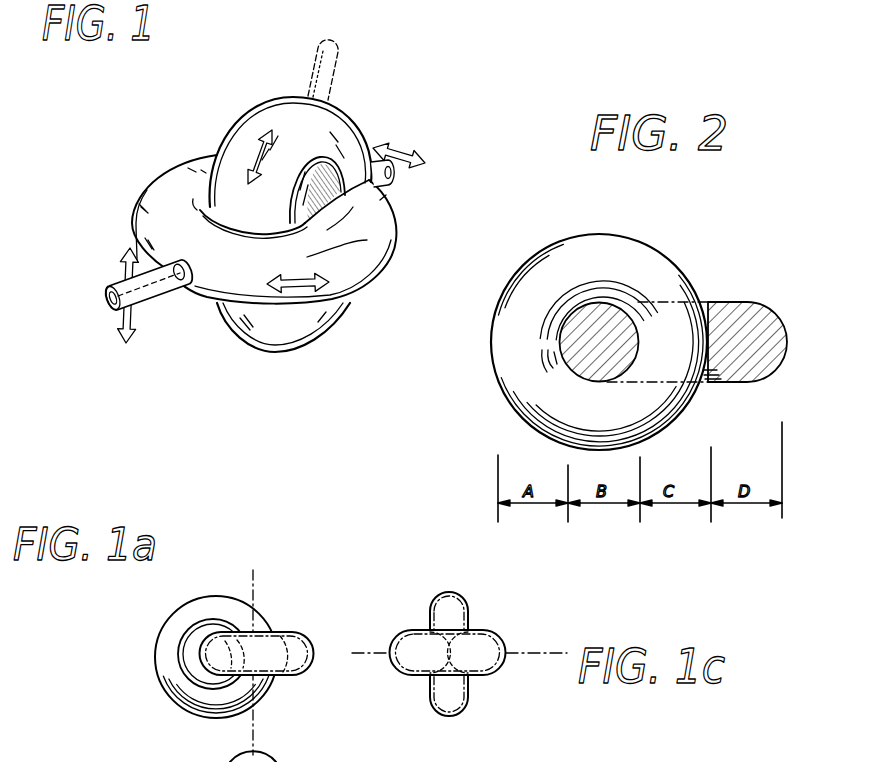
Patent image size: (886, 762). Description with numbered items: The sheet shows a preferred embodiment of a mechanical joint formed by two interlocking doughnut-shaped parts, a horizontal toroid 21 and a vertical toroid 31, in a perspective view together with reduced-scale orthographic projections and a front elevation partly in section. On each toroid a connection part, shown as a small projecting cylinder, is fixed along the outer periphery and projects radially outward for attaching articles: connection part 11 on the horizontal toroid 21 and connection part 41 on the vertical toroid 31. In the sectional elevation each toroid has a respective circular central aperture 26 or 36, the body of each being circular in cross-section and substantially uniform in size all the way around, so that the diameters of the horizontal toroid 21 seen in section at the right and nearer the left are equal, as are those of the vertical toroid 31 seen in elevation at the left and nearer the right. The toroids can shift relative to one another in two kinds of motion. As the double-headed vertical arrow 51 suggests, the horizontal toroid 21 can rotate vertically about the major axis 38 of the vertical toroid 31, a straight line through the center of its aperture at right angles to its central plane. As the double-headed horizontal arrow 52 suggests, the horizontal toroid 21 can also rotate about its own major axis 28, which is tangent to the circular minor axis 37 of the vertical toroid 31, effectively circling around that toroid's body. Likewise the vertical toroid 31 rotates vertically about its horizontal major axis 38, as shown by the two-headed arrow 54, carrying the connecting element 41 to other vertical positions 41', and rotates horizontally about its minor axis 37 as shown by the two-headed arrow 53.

In FIG. 1, the connection part 11 is at (152, 290).
In FIG. 1, the horizontal toroid 21 is at (369, 246).
In FIG. 2, the horizontal toroid 21 is at (600, 353).
In FIG. 1A, the horizontal toroid 21 is at (297, 643).
In FIG. 1C, the horizontal toroid 21 is at (498, 643).
In FIG. 2, the circular central aperture 26 is at (714, 295).
In FIG. 1A, the major axis 28 is at (253, 723).
In FIG. 1, the vertical toroid 31 is at (332, 130).
In FIG. 2, the vertical toroid 31 is at (626, 257).
In FIG. 1A, the vertical toroid 31 is at (208, 604).
In FIG. 1C, the vertical toroid 31 is at (448, 607).
In FIG. 2, the circular central aperture 36 is at (563, 333).
In FIG. 1A, the minor axis 37 is at (180, 654).
In FIG. 1C, the major axis 38 is at (528, 657).
In FIG. 1, the connection part 41 is at (405, 186).
In FIG. 1, the other vertical positions of connecting element 41' is at (287, 64).
In FIG. 1, the double-headed vertical arrow 51 is at (117, 330).
In FIG. 1, the double-headed horizontal arrow 52 is at (302, 290).
In FIG. 1, the two-headed arrow 53 is at (424, 155).
In FIG. 1, the two-headed arrow 54 is at (263, 132).